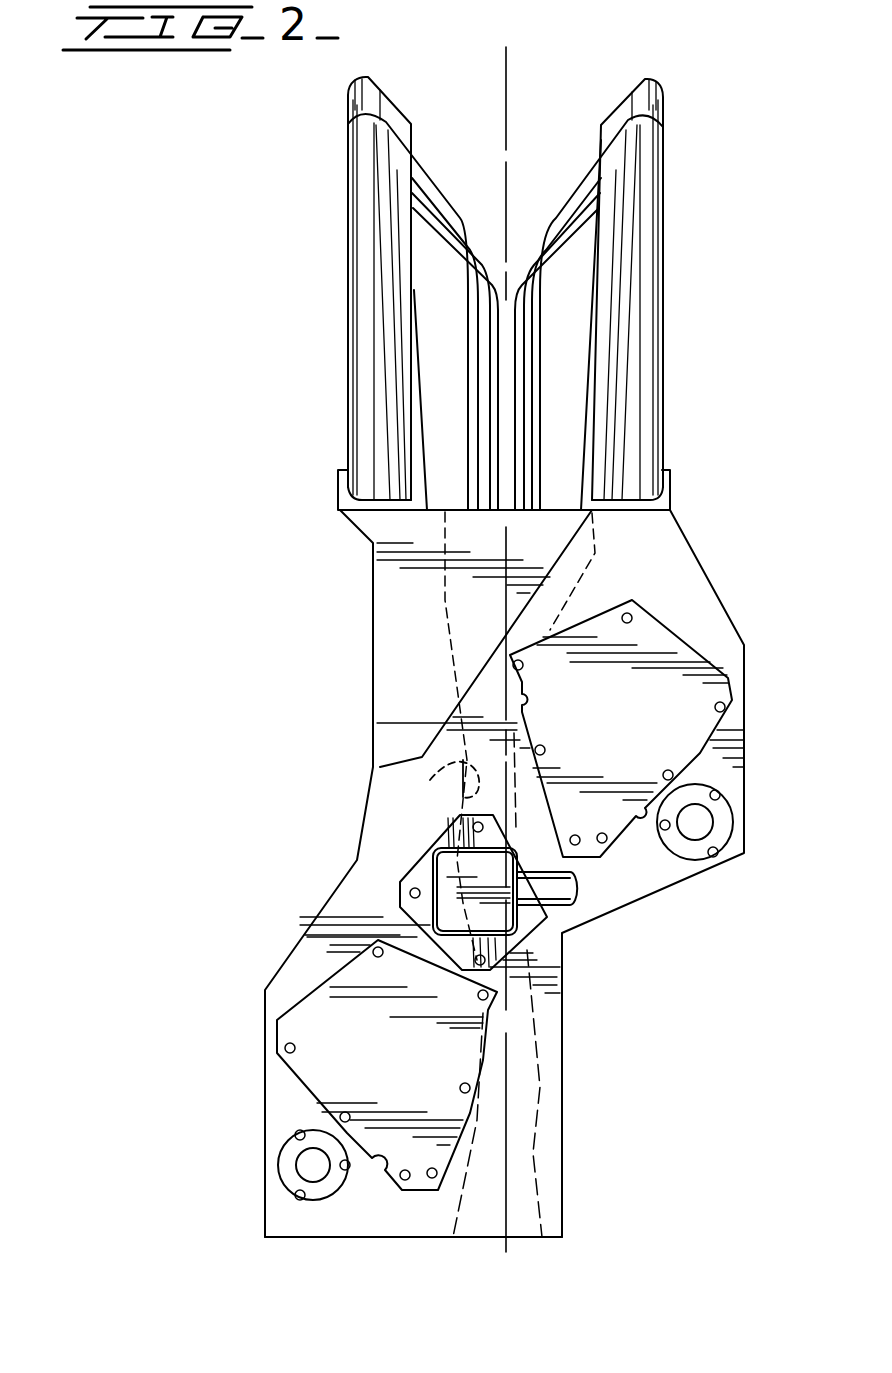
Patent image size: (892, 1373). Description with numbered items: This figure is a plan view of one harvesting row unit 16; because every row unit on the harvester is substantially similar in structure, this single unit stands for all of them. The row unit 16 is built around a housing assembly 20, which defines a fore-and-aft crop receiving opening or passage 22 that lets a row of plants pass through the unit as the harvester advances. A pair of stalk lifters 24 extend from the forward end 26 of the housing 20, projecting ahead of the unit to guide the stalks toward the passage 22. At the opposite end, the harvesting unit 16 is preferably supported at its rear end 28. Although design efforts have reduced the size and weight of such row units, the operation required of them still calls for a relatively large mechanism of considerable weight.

The row unit 16 is at (331, 681).
The housing assembly 20 is at (673, 592).
The crop receiving opening or passage 22 is at (441, 786).
The stalk lifters 24 is at (393, 120).
The forward end 26 is at (430, 512).
The rear end 28 is at (360, 1237).